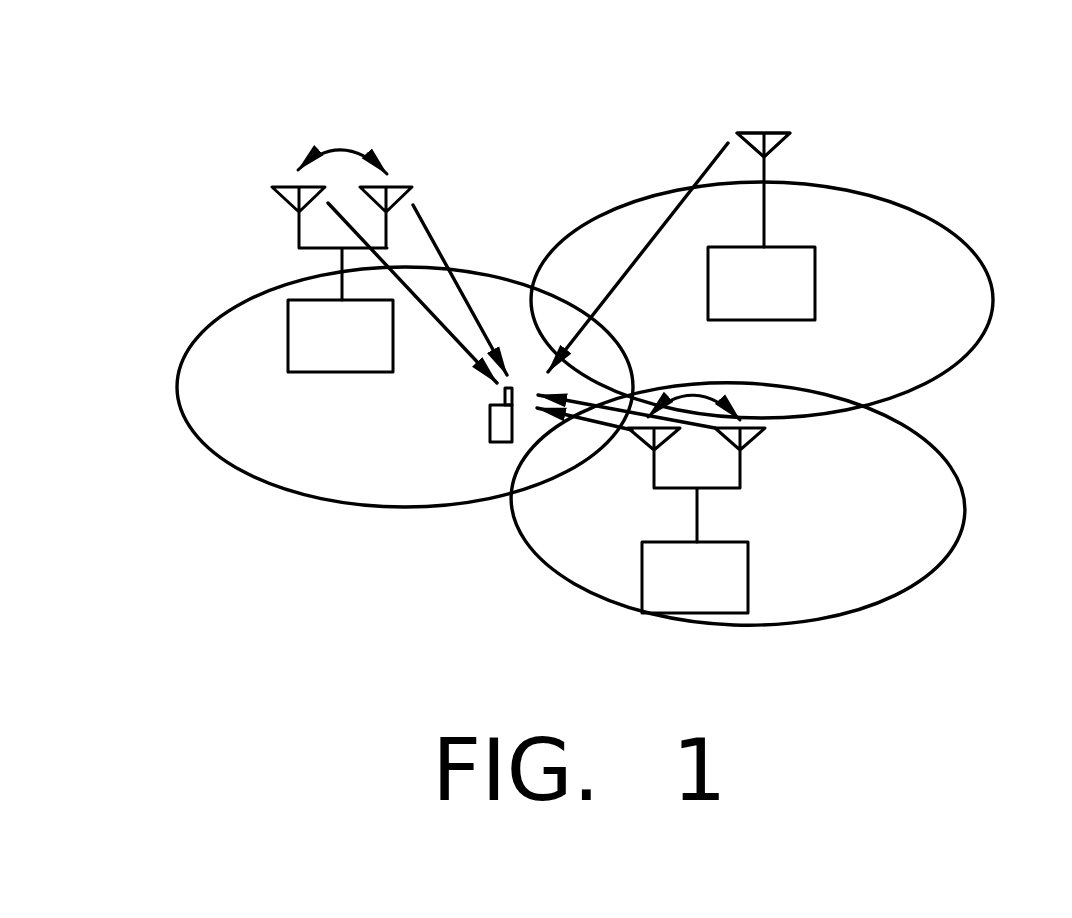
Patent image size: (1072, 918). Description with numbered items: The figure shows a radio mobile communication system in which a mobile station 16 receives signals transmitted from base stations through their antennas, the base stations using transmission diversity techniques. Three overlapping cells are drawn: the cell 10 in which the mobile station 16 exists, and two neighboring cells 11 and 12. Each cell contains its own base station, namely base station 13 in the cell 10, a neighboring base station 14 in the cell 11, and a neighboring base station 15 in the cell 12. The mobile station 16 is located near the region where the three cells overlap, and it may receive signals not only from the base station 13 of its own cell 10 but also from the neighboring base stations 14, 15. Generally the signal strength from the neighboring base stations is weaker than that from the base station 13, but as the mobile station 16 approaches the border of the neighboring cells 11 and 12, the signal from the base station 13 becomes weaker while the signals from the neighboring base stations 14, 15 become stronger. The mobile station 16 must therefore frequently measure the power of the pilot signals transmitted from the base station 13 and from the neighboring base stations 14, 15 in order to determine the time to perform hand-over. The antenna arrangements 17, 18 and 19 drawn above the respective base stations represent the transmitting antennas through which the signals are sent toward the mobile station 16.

The cell 10 is at (193, 330).
The cell 11 is at (938, 222).
The cell 12 is at (965, 513).
The base station 13 is at (313, 372).
The neighboring base station 14 is at (805, 288).
The neighboring base station 15 is at (748, 572).
The mobile station 16 is at (490, 425).
The antenna switching of first base station 17 is at (362, 152).
The antenna of second base station 18 is at (775, 113).
The antenna switching of third base station 19 is at (717, 397).